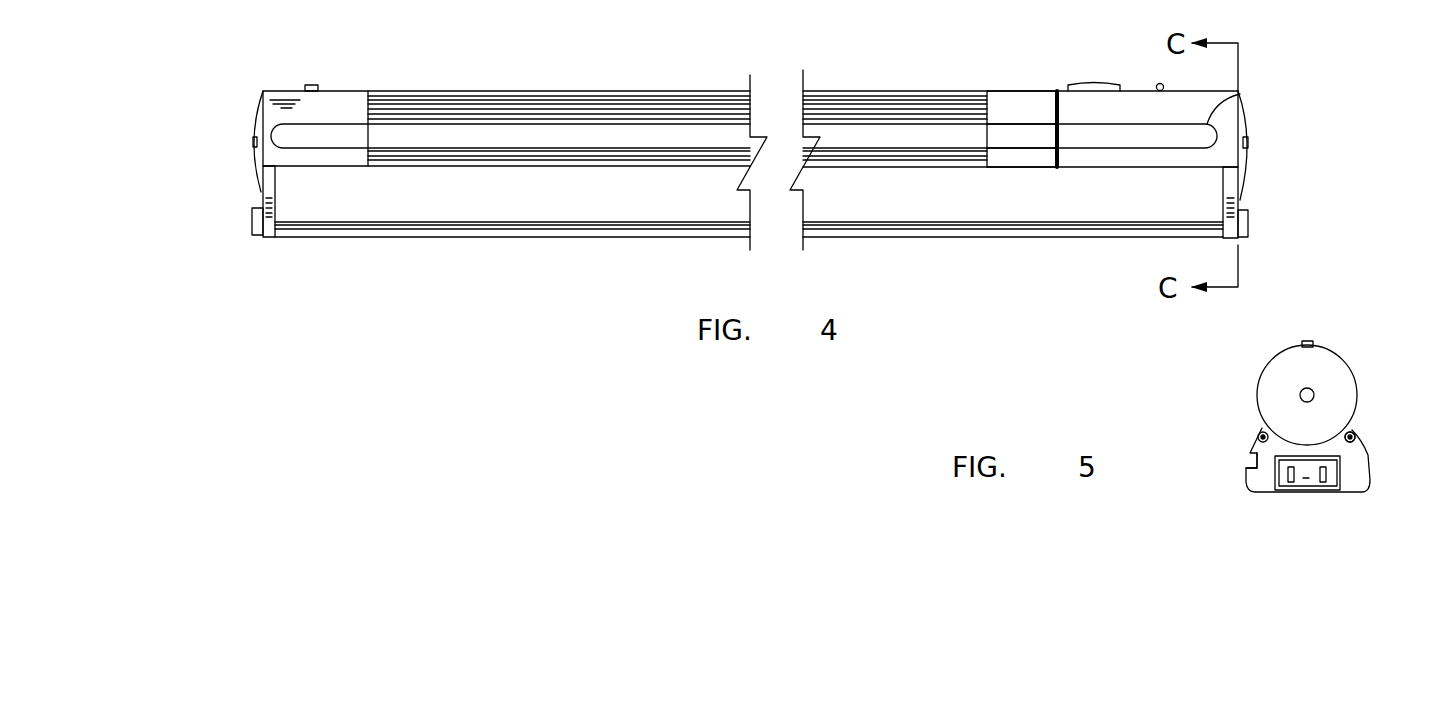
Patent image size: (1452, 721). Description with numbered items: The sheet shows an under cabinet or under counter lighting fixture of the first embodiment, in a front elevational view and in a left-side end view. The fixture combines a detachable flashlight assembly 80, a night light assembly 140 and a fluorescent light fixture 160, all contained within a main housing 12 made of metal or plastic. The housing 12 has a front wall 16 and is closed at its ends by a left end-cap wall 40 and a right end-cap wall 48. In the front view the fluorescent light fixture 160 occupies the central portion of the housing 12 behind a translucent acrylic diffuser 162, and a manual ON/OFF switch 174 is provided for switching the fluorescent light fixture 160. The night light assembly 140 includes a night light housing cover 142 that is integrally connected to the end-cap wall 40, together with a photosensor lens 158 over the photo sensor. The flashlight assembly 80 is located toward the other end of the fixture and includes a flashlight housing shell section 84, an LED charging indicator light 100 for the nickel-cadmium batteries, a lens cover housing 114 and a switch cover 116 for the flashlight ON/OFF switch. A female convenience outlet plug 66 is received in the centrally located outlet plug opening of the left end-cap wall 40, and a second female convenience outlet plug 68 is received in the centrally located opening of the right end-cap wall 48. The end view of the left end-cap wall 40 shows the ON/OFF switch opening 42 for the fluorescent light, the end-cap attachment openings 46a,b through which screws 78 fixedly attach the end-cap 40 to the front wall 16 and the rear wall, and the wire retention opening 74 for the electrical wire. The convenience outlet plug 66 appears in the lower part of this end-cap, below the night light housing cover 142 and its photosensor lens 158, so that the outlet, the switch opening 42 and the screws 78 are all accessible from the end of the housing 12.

In FIG. 4, the main housing 12 is at (528, 241).
In FIG. 4, the front wall 16 is at (876, 214).
In FIG. 4, the left end-cap wall 40 is at (256, 192).
In FIG. 5, the left end-cap wall 40 is at (1354, 473).
In FIG. 5, the ON/OFF switch opening 42 is at (1275, 476).
In FIG. 5, the end-cap attachment openings 46a,b is at (1258, 425).
In FIG. 4, the right end-cap wall 48 is at (1243, 196).
In FIG. 4, the female convenience outlet plug 66 is at (252, 224).
In FIG. 5, the female convenience outlet plug 66 is at (1306, 479).
In FIG. 4, the female convenience outlet plug 68 is at (1250, 218).
In FIG. 5, the wire retention opening 74 is at (1250, 460).
In FIG. 5, the screws 78 is at (1352, 430).
In FIG. 4, the flashlight assembly 80 is at (1014, 89).
In FIG. 4, the flashlight housing shell section 84 is at (1240, 94).
In FIG. 4, the LED charging indicator light 100 is at (1159, 83).
In FIG. 4, the lens cover housing 114 is at (1020, 142).
In FIG. 4, the switch cover 116 is at (1103, 85).
In FIG. 4, the night light assembly 140 is at (369, 90).
In FIG. 4, the night light housing cover 142 is at (308, 140).
In FIG. 4, the photosensor lens 158 is at (313, 85).
In FIG. 5, the photosensor lens 158 is at (1308, 340).
In FIG. 4, the fluorescent light fixture 160 is at (611, 89).
In FIG. 4, the translucent acrylic diffuser 162 is at (640, 105).
In FIG. 4, the manual ON/OFF switch 174 is at (252, 138).
In FIG. 5, the manual ON/OFF switch 174 is at (1300, 392).